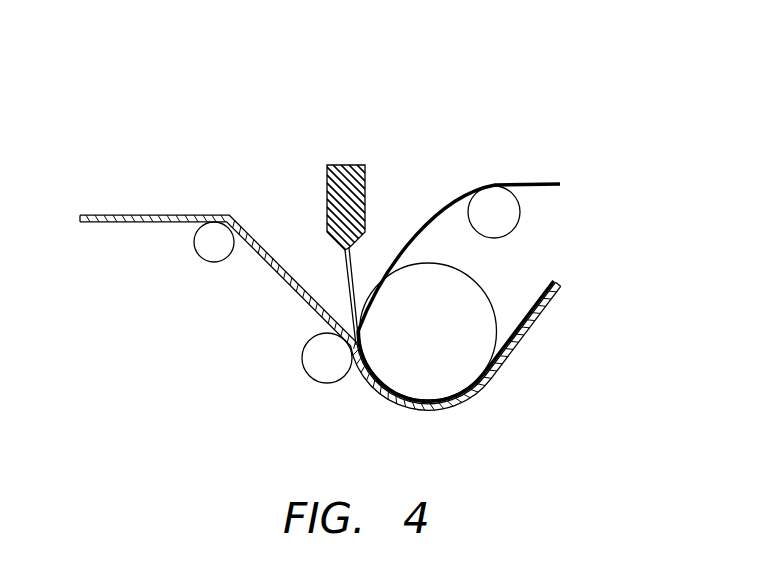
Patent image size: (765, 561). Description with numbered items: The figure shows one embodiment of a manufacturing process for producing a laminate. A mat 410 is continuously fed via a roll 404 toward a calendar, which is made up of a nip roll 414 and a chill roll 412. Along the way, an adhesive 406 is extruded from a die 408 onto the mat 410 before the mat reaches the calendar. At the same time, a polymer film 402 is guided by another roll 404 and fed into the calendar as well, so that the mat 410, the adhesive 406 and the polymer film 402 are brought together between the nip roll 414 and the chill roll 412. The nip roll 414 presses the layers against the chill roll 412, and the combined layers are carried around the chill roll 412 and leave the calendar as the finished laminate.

The polymer film 402 is at (543, 183).
The roll 404 is at (210, 247).
The adhesive 406 is at (353, 260).
The die 408 is at (327, 181).
The mat 410 is at (122, 217).
The chill roll 412 is at (473, 297).
The nip roll 414 is at (310, 362).